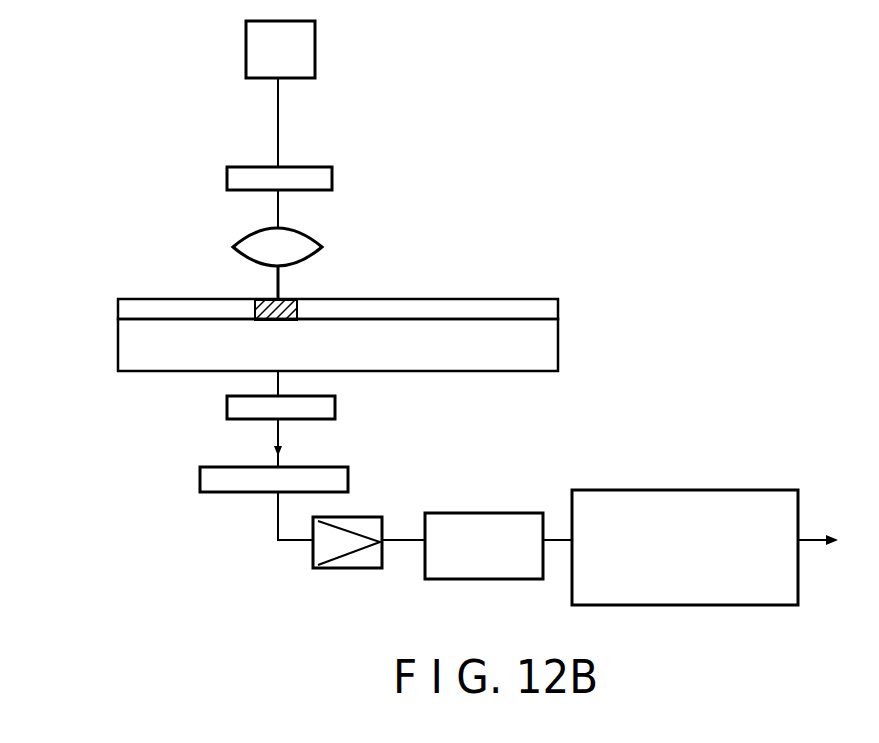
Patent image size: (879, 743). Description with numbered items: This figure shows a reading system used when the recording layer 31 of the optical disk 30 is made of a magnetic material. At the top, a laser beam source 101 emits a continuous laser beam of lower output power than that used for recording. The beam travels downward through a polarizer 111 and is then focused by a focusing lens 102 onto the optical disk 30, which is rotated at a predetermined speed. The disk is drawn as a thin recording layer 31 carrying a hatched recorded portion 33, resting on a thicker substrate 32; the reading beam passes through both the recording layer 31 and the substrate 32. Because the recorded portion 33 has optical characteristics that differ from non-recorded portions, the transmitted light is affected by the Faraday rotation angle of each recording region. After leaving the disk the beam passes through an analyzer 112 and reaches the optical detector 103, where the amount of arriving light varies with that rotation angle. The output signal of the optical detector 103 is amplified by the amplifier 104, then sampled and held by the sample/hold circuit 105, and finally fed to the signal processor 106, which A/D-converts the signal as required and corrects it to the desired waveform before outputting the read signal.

The optical disk 30 is at (285, 331).
The recording layer 31 is at (157, 298).
The substrate 32 is at (176, 372).
The recorded portion 33 is at (290, 298).
The laser beam source 101 is at (316, 56).
The focusing lens 102 is at (322, 246).
The optical detector 103 is at (348, 480).
The amplifier 104 is at (370, 569).
The sample/hold circuit 105 is at (503, 512).
The signal processor 106 is at (681, 490).
The polarizer 111 is at (332, 172).
The analyzer 112 is at (335, 410).